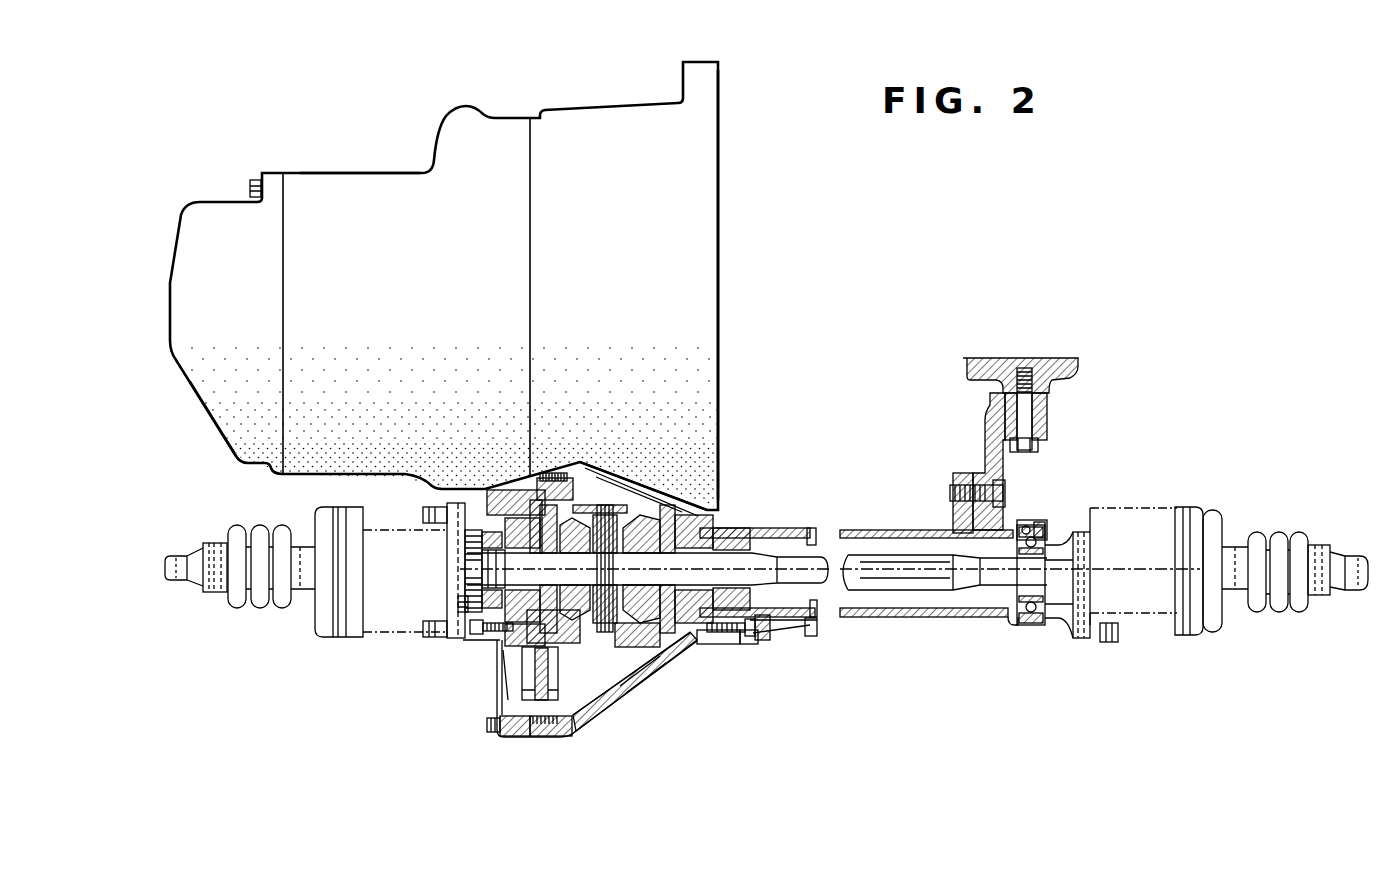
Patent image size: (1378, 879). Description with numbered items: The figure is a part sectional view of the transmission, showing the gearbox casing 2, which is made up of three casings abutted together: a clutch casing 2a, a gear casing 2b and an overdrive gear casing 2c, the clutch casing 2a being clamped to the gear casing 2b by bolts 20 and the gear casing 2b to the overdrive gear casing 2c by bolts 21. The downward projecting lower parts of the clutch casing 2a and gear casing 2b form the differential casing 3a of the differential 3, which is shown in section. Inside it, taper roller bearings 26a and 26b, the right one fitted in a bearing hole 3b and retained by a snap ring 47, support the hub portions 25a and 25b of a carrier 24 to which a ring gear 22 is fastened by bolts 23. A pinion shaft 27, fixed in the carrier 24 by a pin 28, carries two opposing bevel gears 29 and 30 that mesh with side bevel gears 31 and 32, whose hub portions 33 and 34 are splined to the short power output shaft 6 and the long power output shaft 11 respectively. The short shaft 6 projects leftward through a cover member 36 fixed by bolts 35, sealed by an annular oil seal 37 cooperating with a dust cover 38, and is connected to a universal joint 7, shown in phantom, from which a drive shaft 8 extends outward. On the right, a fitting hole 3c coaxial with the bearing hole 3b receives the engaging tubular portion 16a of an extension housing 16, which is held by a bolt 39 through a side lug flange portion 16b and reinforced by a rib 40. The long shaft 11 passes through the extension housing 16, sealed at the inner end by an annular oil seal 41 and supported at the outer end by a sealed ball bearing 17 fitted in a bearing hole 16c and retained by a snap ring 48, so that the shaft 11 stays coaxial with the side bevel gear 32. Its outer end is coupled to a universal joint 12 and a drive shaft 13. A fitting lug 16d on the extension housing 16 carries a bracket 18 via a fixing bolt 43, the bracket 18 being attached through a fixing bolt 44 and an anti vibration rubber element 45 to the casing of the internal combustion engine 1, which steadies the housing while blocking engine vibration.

The internal combustion engine 1 is at (1075, 372).
The gearbox casing 2 is at (333, 170).
The clutch casing 2a is at (716, 244).
The gear casing 2b is at (390, 182).
The overdrive gear casing 2c is at (232, 442).
The differential 3 is at (614, 690).
The differential casing 3a is at (642, 682).
The bearing hole 3b is at (698, 638).
The fitting hole 3c is at (731, 646).
The short power output shaft 6 is at (531, 638).
The universal joint 7 is at (350, 627).
The left drive shaft 8 is at (178, 580).
The long power output shaft 11 is at (822, 590).
The universal joint 12 is at (1185, 627).
The drive shaft 13 is at (1356, 557).
The extension housing 16 is at (883, 618).
The engaging tubular portion 16a is at (748, 604).
The side lug flange portion 16b is at (767, 638).
The bearing hole 16c is at (1037, 627).
The fitting lug 16d is at (957, 508).
The sealed ball bearing 17 is at (1016, 625).
The bracket 18 is at (997, 462).
The bolts 20 is at (488, 724).
The bolts 21 is at (250, 189).
The ring gear 22 is at (578, 715).
The bolts 23 is at (570, 482).
The carrier 24 is at (560, 668).
The hub portion 25a is at (506, 568).
The hub portion 25b is at (766, 568).
The taper roller bearing 26a is at (492, 641).
The taper roller bearing 26b is at (695, 644).
The pinion shaft 27 is at (602, 640).
The pin 28 is at (623, 478).
The bevel gear 29 is at (653, 489).
The bevel gear 30 is at (650, 655).
The side bevel gear 31 is at (572, 634).
The side bevel gear 32 is at (642, 629).
The hub portion 33 is at (520, 675).
The hub portion 34 is at (680, 502).
The bolts 35 is at (456, 603).
The cover member 36 is at (488, 494).
The annular oil seal 37 is at (477, 563).
The dust cover 38 is at (465, 532).
The bolt 39 is at (787, 640).
The rib 40 is at (810, 623).
The annular oil seal 41 is at (748, 543).
The fixing bolt 43 is at (1008, 497).
The fixing bolt 44 is at (1027, 415).
The anti vibration rubber element 45 is at (1047, 396).
The snap ring 47 is at (712, 526).
The snap ring 48 is at (1043, 533).